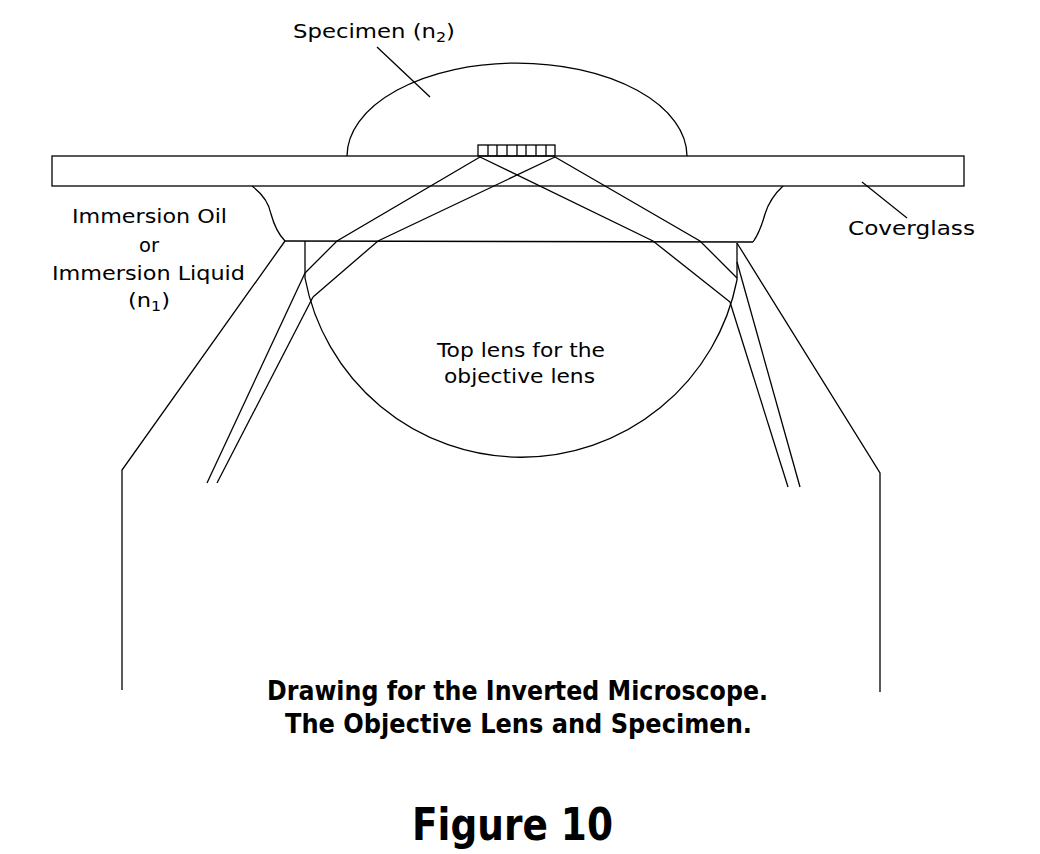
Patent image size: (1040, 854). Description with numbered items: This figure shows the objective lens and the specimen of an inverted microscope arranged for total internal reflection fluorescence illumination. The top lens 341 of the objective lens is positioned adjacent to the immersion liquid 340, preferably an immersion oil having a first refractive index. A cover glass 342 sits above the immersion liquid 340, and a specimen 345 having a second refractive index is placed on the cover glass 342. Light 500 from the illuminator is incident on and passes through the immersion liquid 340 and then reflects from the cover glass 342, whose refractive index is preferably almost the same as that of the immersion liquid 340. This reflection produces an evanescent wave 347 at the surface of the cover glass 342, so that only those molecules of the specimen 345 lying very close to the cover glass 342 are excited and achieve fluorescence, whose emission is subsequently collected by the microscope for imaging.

The immersion oil or immersion liquid 340 is at (231, 213).
The top lens of the objective lens 341 is at (425, 422).
The coverglass 342 is at (943, 168).
The specimen 345 is at (626, 96).
The grating / diffraction structure on specimen 347 is at (538, 146).
The light rays emerging from the top lens 500 is at (229, 458).